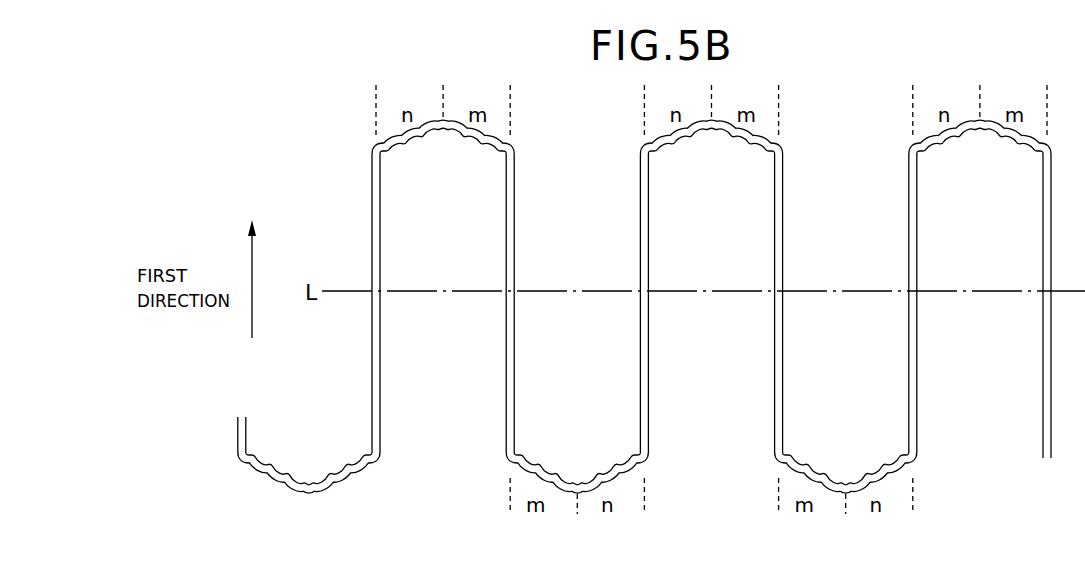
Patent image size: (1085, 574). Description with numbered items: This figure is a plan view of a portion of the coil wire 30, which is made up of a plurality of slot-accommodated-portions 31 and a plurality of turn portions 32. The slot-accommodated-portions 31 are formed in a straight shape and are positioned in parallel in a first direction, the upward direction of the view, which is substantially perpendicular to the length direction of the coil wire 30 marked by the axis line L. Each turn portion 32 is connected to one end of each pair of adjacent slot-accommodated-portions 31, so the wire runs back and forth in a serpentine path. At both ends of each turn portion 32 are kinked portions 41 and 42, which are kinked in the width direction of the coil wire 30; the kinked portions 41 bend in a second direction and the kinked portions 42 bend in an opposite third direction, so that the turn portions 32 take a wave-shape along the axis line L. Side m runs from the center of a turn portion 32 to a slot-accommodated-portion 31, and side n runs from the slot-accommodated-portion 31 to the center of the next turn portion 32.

The coil wire 30 is at (358, 170).
The slot-accommodated-portion 31 is at (371, 366).
The turn portion 32 is at (442, 129).
The kinked portion 41 is at (369, 138).
The kinked portion 42 is at (513, 140).